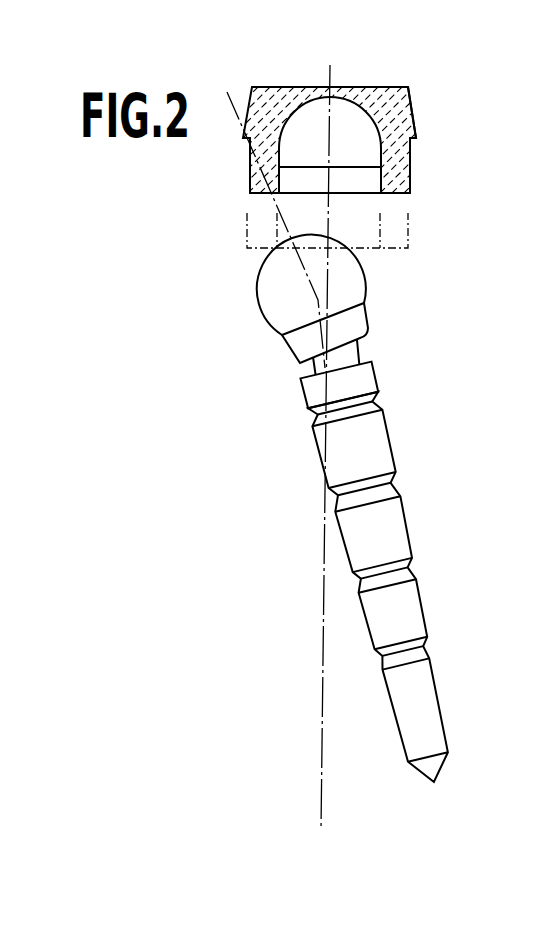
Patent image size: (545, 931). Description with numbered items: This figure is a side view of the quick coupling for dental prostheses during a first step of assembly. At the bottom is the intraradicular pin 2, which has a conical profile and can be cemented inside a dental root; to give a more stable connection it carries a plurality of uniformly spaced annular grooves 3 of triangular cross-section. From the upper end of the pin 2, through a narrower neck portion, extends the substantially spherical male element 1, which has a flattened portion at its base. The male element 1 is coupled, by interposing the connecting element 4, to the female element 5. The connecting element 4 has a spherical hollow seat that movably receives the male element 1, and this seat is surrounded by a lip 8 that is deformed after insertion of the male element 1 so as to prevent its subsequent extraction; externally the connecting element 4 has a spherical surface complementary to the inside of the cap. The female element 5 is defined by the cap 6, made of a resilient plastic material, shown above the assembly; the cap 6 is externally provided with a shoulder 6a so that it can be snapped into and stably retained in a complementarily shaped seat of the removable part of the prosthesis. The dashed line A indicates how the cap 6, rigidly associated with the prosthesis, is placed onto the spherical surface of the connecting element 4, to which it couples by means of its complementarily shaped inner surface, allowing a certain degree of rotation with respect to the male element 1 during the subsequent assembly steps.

The spherical male element 1 is at (362, 345).
The intraradicular pin 2 is at (370, 456).
The annular grooves 3 is at (378, 397).
The connecting element 4 is at (348, 278).
The female element 5 is at (358, 118).
The cap 6 is at (393, 98).
The shoulder 6a is at (412, 142).
The lip 8 is at (303, 343).
The dashed line A is at (410, 226).